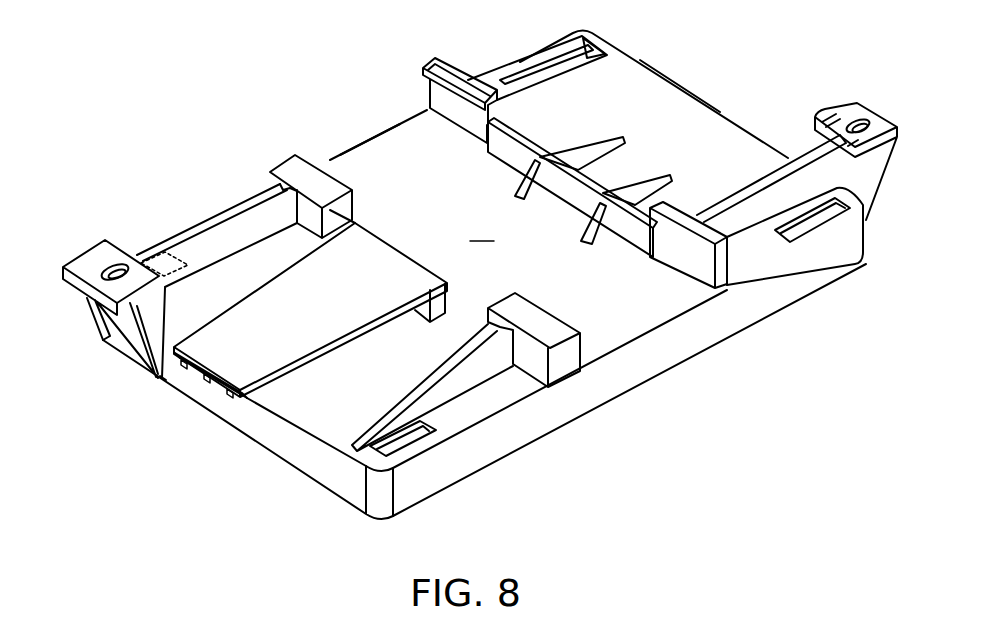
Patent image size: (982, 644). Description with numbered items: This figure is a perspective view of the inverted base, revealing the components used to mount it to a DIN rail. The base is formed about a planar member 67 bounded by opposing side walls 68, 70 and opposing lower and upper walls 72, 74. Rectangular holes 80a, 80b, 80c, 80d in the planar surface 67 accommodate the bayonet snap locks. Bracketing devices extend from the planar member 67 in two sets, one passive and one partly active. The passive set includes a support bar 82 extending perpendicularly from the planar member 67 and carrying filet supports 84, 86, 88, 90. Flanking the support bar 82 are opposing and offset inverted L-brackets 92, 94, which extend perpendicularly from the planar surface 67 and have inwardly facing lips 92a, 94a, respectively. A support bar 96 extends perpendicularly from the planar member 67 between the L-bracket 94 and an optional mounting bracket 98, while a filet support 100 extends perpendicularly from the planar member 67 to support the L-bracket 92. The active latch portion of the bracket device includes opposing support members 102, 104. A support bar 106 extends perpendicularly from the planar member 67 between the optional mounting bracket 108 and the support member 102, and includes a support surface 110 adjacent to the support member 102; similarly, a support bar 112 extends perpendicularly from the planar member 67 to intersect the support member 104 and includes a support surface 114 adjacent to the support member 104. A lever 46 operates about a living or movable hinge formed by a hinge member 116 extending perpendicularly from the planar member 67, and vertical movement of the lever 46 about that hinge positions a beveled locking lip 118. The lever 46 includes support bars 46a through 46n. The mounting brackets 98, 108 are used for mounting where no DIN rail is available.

The lever 46 is at (215, 400).
The support bar 46a is at (167, 380).
The support bar 46n is at (233, 403).
The planar member 67 is at (483, 230).
The side wall 68 is at (387, 140).
The side wall 70 is at (670, 353).
The lower wall 72 is at (325, 478).
The upper wall 74 is at (675, 98).
The rectangular hole 80a is at (407, 445).
The rectangular hole 80b is at (160, 263).
The rectangular hole 80c is at (573, 53).
The rectangular hole 80d is at (808, 230).
The support bar 82 is at (567, 193).
The filet support 84 is at (520, 183).
The filet support 86 is at (597, 240).
The filet support 88 is at (573, 158).
The filet support 90 is at (630, 195).
The inverted L-bracket 92 is at (438, 100).
The inwardly facing lip 92a is at (427, 65).
The inverted L-bracket 94 is at (708, 275).
The inwardly facing lip 94a is at (712, 256).
The support bar 96 is at (772, 192).
The mounting bracket 98 is at (843, 117).
The filet support 100 is at (517, 88).
The support member 102 is at (343, 202).
The support member 104 is at (572, 367).
The support bar 106 is at (217, 233).
The mounting bracket 108 is at (88, 284).
The support surface 110 is at (278, 178).
The support bar 112 is at (463, 368).
The support surface 114 is at (513, 330).
The hinge member 116 is at (447, 300).
The beveled locking lip 118 is at (447, 284).